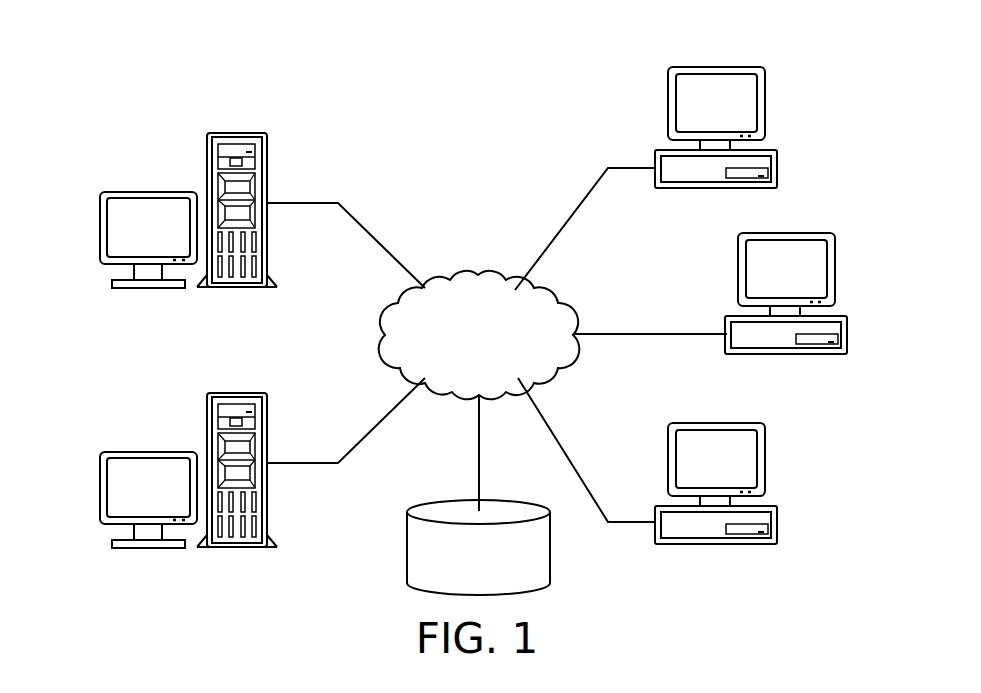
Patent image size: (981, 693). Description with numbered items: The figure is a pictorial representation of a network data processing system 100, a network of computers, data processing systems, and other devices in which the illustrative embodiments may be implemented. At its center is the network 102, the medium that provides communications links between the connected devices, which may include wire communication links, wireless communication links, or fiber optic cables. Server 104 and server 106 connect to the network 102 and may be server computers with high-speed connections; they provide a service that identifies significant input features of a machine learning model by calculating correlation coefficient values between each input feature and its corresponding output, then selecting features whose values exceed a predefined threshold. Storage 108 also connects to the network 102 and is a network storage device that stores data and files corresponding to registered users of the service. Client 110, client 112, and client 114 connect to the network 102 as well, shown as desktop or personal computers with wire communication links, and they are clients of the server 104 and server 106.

The network data processing system 100 is at (341, 61).
The network 102 is at (452, 281).
The server 104 is at (100, 228).
The server 106 is at (100, 487).
The storage 108 is at (407, 548).
The client 110 is at (778, 163).
The client 112 is at (848, 340).
The client 114 is at (778, 532).